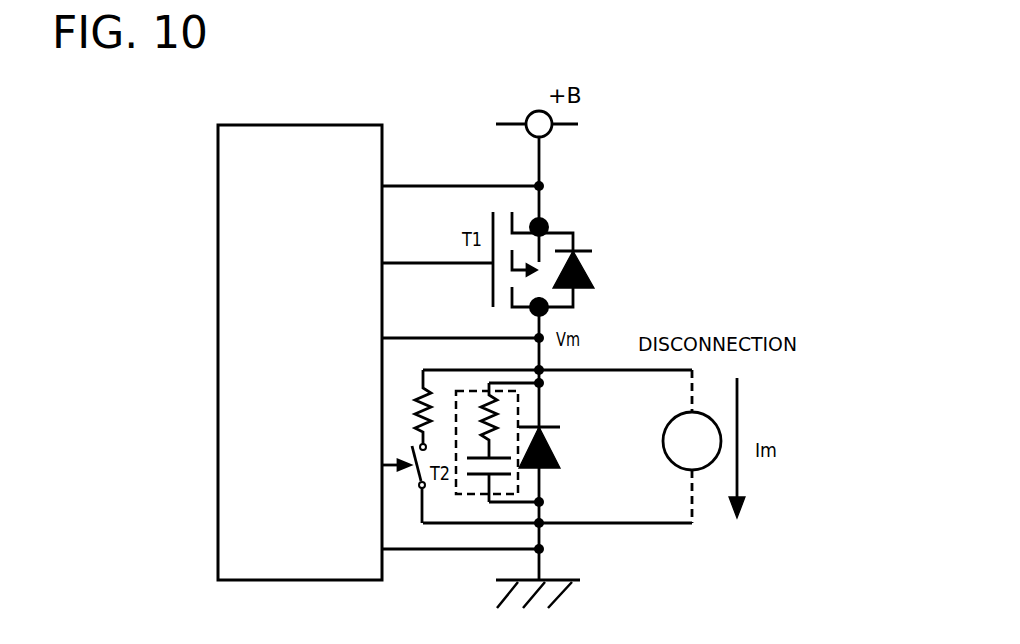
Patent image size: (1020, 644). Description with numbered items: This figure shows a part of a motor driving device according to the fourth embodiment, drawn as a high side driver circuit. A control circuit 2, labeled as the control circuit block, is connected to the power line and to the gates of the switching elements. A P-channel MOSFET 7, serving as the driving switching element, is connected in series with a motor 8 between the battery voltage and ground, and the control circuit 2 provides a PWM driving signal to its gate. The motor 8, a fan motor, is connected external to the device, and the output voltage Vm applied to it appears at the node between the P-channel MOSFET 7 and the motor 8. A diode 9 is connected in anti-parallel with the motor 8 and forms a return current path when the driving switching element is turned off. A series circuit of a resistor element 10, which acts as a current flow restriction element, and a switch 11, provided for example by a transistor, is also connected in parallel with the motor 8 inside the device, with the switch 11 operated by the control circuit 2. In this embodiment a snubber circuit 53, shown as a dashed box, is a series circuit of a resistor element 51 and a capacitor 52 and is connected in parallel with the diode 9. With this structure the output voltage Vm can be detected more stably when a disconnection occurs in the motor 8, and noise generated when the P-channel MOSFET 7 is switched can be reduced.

The control circuit 2 is at (297, 125).
The P-channel MOSFET 7 is at (590, 263).
The motor 8 is at (669, 425).
The diode 9 is at (558, 440).
The resistor element 10 is at (412, 402).
The switch 11 is at (412, 478).
The resistor element 51 is at (505, 413).
The capacitor 52 is at (512, 484).
The snubber circuit 53 is at (457, 494).